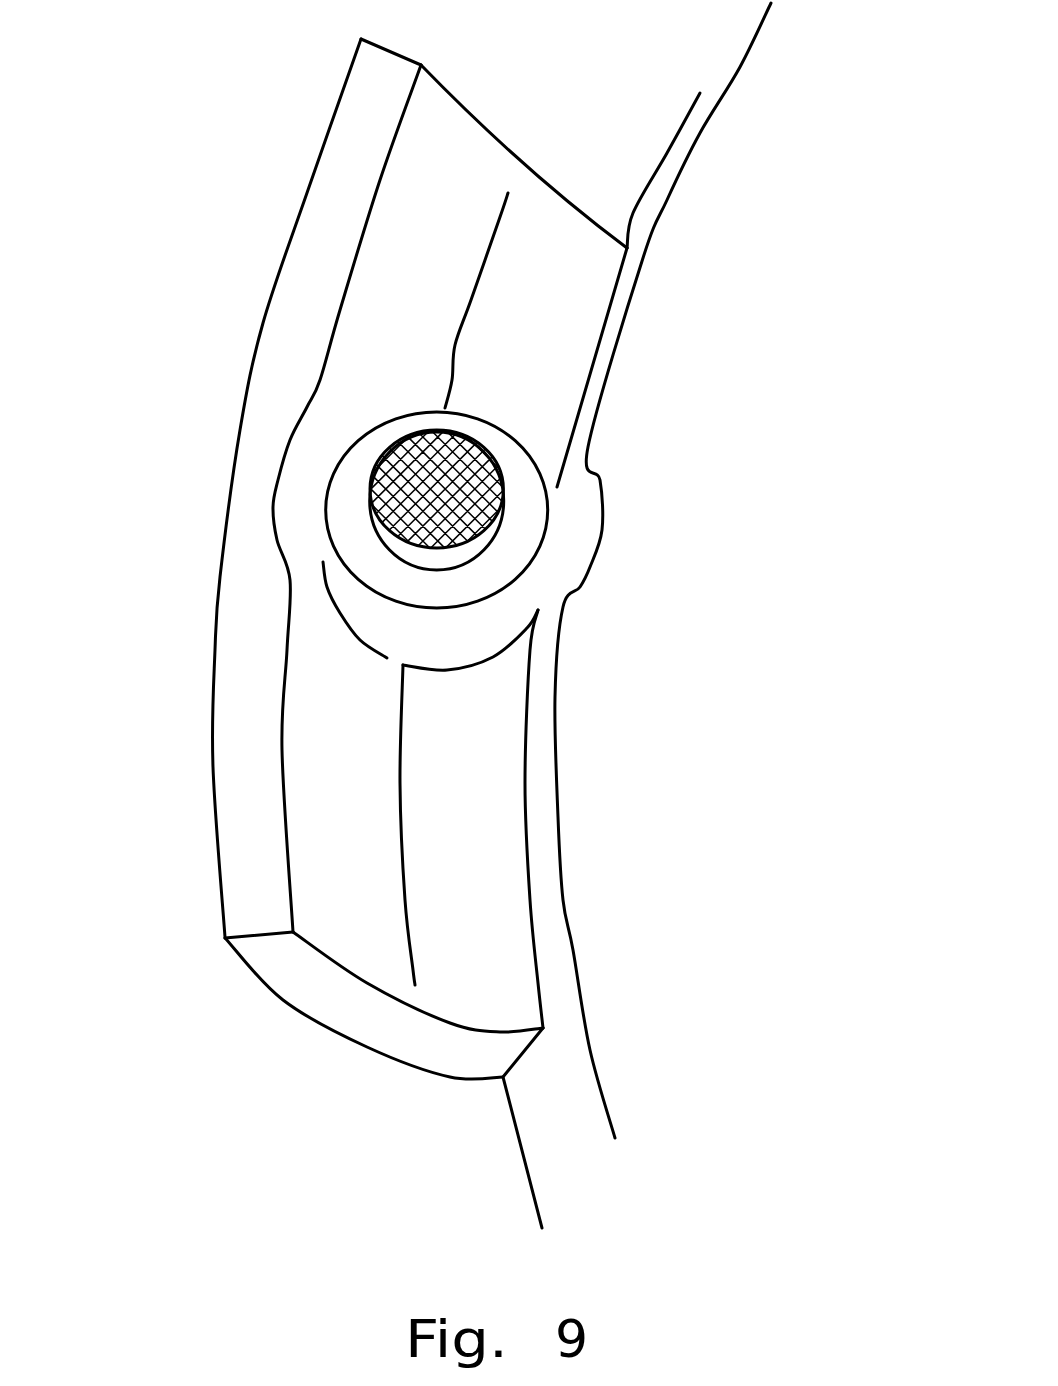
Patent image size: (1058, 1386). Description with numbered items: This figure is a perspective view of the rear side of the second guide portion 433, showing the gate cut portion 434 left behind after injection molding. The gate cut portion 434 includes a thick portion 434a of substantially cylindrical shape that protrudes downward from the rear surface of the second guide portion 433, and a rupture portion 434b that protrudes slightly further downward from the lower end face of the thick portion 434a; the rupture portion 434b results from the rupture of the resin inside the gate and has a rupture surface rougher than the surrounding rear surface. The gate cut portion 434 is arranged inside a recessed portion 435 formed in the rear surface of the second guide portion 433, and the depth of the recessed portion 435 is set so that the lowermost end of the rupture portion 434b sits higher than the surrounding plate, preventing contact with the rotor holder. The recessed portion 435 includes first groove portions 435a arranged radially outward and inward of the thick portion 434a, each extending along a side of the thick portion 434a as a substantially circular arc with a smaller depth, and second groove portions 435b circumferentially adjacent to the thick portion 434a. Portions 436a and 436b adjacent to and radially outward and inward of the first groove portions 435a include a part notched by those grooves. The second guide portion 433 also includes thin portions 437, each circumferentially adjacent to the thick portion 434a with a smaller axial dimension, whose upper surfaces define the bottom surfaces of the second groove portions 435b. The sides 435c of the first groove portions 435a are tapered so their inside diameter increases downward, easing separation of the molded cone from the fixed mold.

The second guide portion 433 is at (257, 256).
The gate cut portion 434 is at (743, 602).
The thick portion 434a is at (477, 637).
The rupture portion 434b is at (480, 517).
The recessed portion 435 is at (780, 352).
The first groove portions 435a is at (580, 493).
The second groove portions 435b is at (555, 380).
The sides of the first groove portions 435c is at (578, 530).
The portion adjacent to the first groove portion 436a is at (257, 499).
The portion adjacent to the first groove portion 436b is at (639, 519).
The thin portions 437 is at (553, 257).